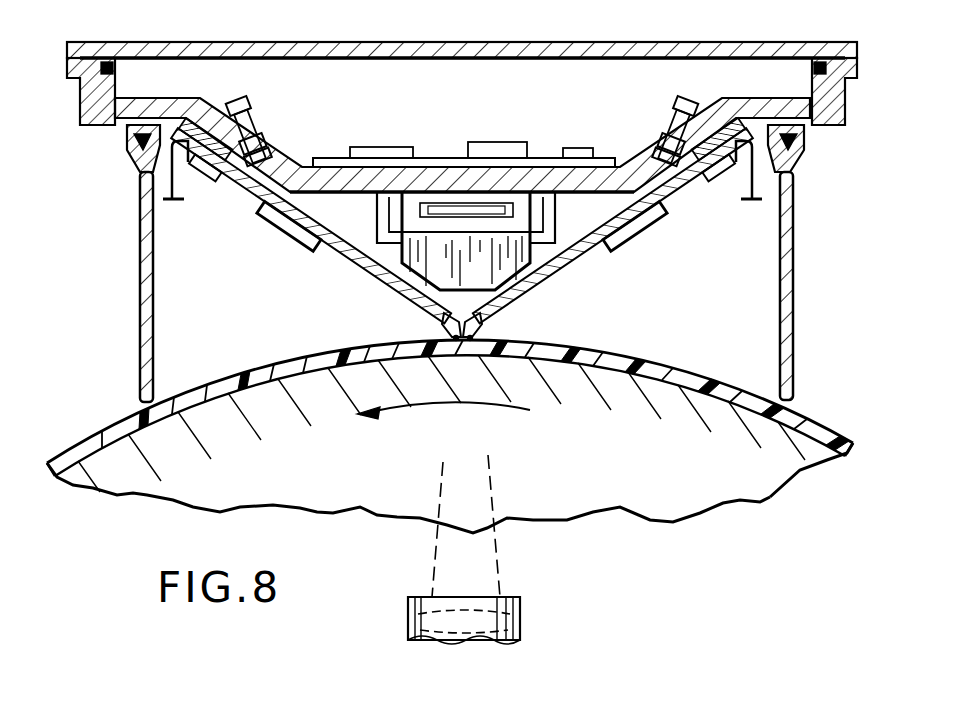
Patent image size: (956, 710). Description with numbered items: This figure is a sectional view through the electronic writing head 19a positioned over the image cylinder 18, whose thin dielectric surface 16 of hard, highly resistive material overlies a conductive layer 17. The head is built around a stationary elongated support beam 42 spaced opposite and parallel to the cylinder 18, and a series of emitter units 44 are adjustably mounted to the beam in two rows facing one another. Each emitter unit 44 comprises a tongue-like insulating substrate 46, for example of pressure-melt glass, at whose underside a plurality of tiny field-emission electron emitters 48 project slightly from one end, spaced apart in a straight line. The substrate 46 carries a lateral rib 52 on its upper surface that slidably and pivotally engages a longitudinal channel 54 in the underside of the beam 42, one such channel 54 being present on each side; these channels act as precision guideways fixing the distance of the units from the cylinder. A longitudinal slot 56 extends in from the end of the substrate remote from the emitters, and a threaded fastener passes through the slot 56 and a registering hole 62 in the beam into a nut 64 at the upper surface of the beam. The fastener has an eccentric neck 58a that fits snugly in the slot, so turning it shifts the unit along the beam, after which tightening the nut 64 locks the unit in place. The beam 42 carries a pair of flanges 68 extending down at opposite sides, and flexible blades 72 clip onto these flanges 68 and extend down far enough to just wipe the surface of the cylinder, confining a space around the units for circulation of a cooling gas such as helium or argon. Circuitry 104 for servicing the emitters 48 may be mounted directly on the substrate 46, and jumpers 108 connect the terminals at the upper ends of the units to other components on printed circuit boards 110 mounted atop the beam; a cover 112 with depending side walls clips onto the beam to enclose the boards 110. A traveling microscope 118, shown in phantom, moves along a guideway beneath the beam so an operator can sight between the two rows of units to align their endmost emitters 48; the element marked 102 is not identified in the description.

The cover 112 is at (477, 44).
The electronic writing head 19a is at (74, 115).
The support beam 42 is at (649, 150).
The printed circuit board 110 is at (442, 156).
The flexible blade 72 is at (142, 266).
The flange 68 is at (128, 162).
The jumper 108 is at (163, 198).
The emitter unit 44 is at (293, 289).
The insulating substrate 46 is at (365, 273).
The circuit 104 is at (296, 236).
The nut 64 is at (278, 92).
The registering hole 62 is at (240, 156).
The lateral rib 52 is at (284, 133).
The longitudinal channel 54 is at (302, 160).
The longitudinal slot 56 is at (221, 172).
The eccentric neck 58a is at (220, 182).
The nozzle tip 102 is at (432, 322).
The electron emitter 48 is at (458, 343).
The dielectric surface 16 is at (105, 428).
The conductive layer 17 is at (763, 490).
The image cylinder 18 is at (392, 505).
The traveling microscope 118 is at (520, 600).